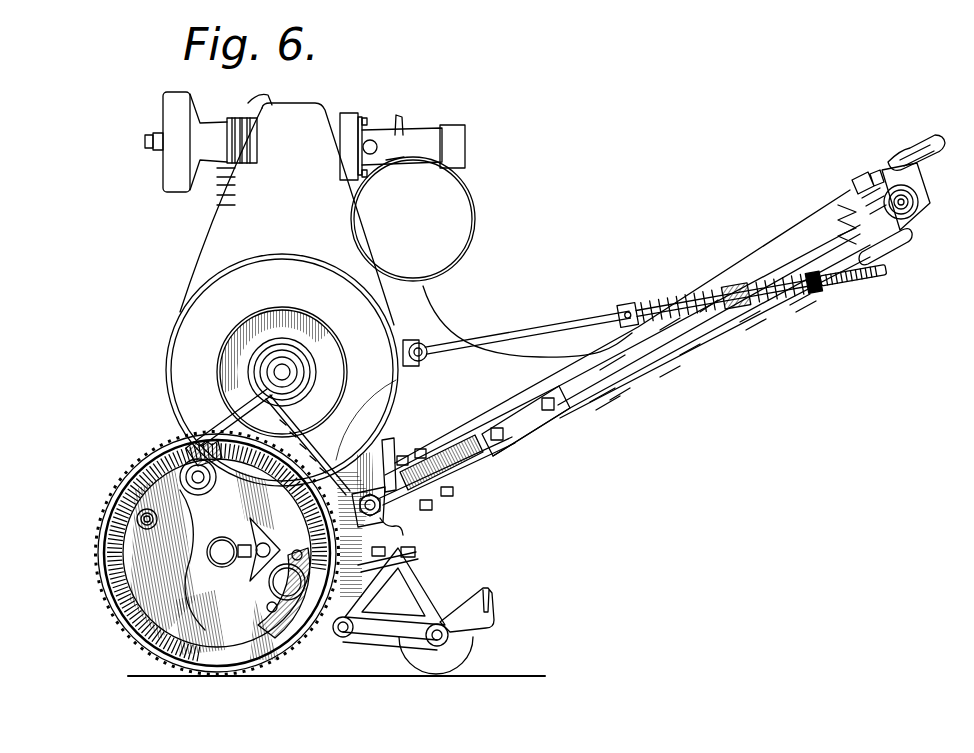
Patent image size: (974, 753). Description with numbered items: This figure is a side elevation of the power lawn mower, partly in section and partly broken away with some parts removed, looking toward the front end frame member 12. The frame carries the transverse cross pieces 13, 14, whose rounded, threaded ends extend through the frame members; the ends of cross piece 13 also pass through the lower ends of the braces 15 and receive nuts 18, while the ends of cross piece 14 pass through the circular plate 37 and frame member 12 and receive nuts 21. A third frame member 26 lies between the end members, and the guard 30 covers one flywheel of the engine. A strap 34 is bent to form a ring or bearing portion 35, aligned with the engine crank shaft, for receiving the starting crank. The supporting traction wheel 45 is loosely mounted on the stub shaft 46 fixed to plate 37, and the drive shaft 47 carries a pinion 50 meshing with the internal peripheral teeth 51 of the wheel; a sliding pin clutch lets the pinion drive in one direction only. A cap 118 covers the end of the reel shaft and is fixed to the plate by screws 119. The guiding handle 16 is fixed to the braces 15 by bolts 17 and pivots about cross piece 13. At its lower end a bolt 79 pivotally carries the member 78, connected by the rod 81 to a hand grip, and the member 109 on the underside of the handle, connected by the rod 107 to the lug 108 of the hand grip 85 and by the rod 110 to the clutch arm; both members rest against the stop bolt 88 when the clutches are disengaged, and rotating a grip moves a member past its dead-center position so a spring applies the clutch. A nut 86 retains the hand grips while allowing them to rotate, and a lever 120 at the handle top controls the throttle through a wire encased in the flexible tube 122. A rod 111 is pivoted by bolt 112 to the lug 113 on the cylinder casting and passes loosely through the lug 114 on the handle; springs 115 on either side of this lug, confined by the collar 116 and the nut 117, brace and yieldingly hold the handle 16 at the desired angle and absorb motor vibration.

The guard 30 is at (200, 310).
The ring or bearing portion 35 is at (302, 382).
The internal peripheral teeth 51 is at (227, 443).
The pinion 50 is at (188, 462).
The strap 34 is at (310, 443).
The third frame member 26 is at (360, 457).
The nut 18 is at (390, 480).
The circular plate 37 is at (138, 567).
The supporting traction wheel 45 is at (165, 638).
The nut 21 is at (150, 525).
The drive shaft 47 is at (204, 473).
The cross piece 14 is at (153, 519).
The stub shaft 46 is at (220, 565).
The cap 118 is at (286, 562).
The screw 119 is at (299, 548).
The rod 81 is at (513, 378).
The bolt 88 is at (622, 350).
The guiding handle 16 is at (632, 370).
The rod 107 is at (693, 348).
The bolt 17 is at (540, 433).
The brace 15 is at (472, 462).
The member 78 is at (419, 449).
The bolt 79 is at (401, 456).
The member 109 is at (444, 496).
The cross piece 13 is at (379, 506).
The rod 110 is at (396, 528).
The end frame member 12 is at (412, 547).
The rod 111 is at (547, 328).
The bolt 112 is at (442, 330).
The lug 113 is at (403, 347).
The flexible tube 122 is at (470, 333).
The collar 116 is at (643, 297).
The spring 115 is at (688, 297).
The lug 114 is at (735, 313).
The nut 117 is at (850, 293).
The hand grip 85 is at (915, 197).
The nut 86 is at (918, 207).
The lever 120 is at (912, 150).
The lug 108 is at (913, 233).